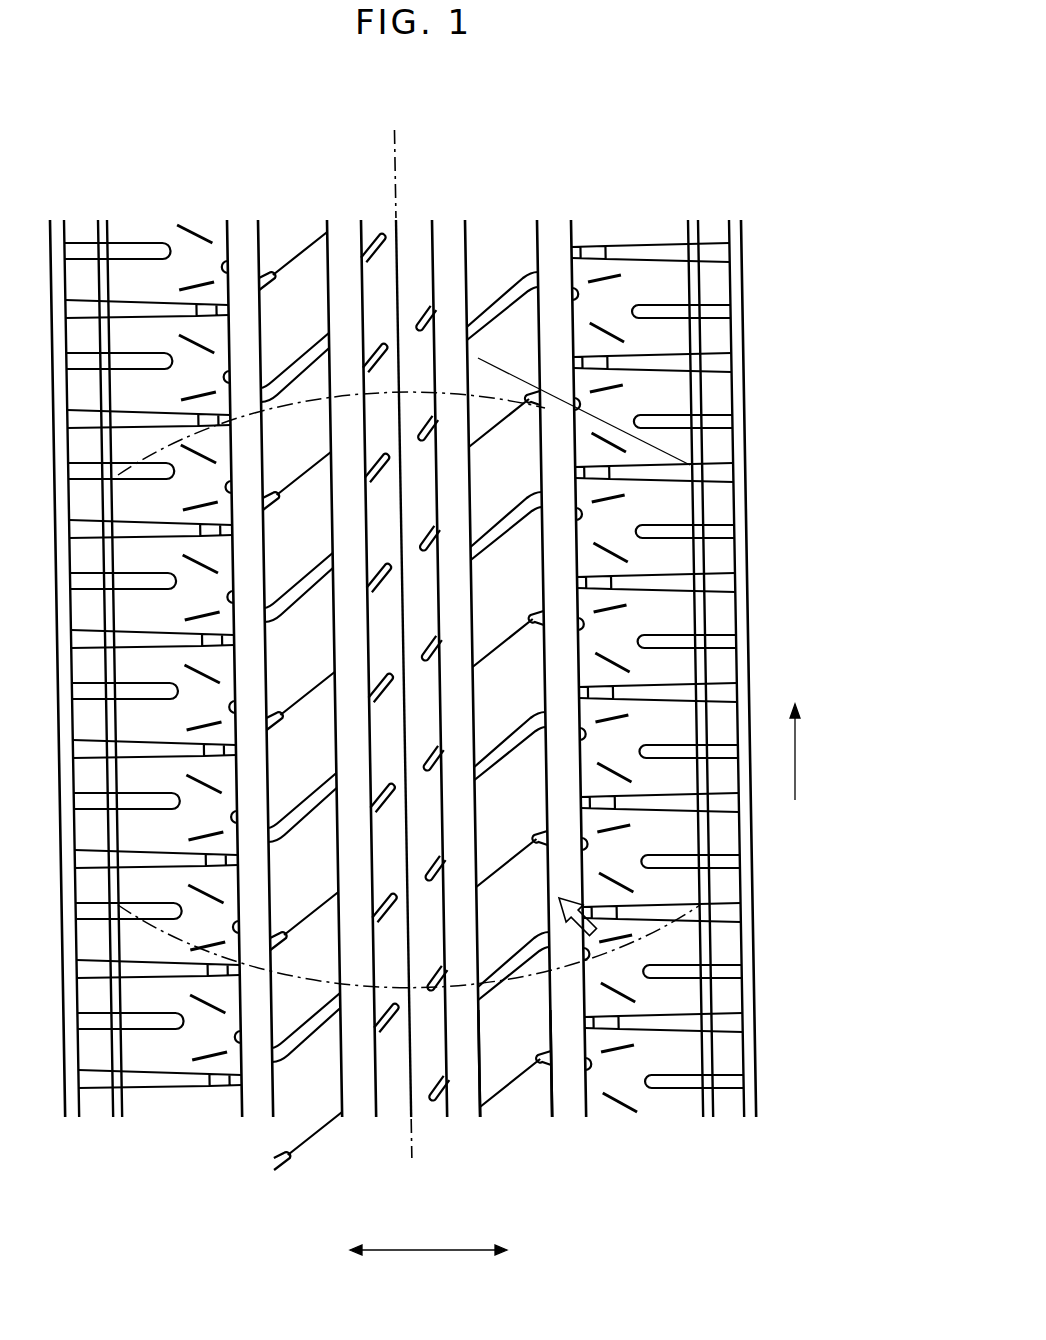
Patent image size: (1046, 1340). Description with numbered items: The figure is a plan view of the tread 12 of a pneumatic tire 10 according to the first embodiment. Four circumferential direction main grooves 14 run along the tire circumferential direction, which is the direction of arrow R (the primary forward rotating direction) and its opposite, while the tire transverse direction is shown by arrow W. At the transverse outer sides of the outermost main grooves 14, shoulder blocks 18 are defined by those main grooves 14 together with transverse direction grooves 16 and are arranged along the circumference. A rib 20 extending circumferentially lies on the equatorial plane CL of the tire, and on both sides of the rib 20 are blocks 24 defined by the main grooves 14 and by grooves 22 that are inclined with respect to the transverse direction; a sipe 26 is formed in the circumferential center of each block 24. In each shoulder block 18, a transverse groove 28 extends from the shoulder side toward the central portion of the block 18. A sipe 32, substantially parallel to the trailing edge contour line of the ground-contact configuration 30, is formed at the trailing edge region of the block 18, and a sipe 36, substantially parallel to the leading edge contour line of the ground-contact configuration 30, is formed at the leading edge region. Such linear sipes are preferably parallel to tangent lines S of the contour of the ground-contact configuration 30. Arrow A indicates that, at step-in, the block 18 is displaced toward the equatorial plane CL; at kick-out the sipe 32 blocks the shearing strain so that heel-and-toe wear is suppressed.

The pneumatic tire 10 is at (765, 246).
The tread 12 is at (509, 674).
The circumferential direction main grooves 14 is at (257, 1100).
The transverse direction grooves 16 is at (682, 368).
The blocks 18 is at (680, 405).
The rib 20 is at (397, 1104).
The grooves inclined with respect to the tire transverse direction 22 is at (530, 948).
The blocks 24 is at (514, 1052).
The sipe 26 is at (524, 852).
The transverse groove 28 is at (680, 428).
The ground-contact configuration 30 is at (456, 388).
The sipe 32 is at (592, 445).
The sipe 36 is at (617, 387).
The tangent lines S is at (512, 376).
The arrow A is at (565, 921).
The arrow (tire rotating direction) R is at (782, 773).
The arrow (tire transverse direction) W is at (432, 1258).
The equatorial plane CL is at (395, 157).